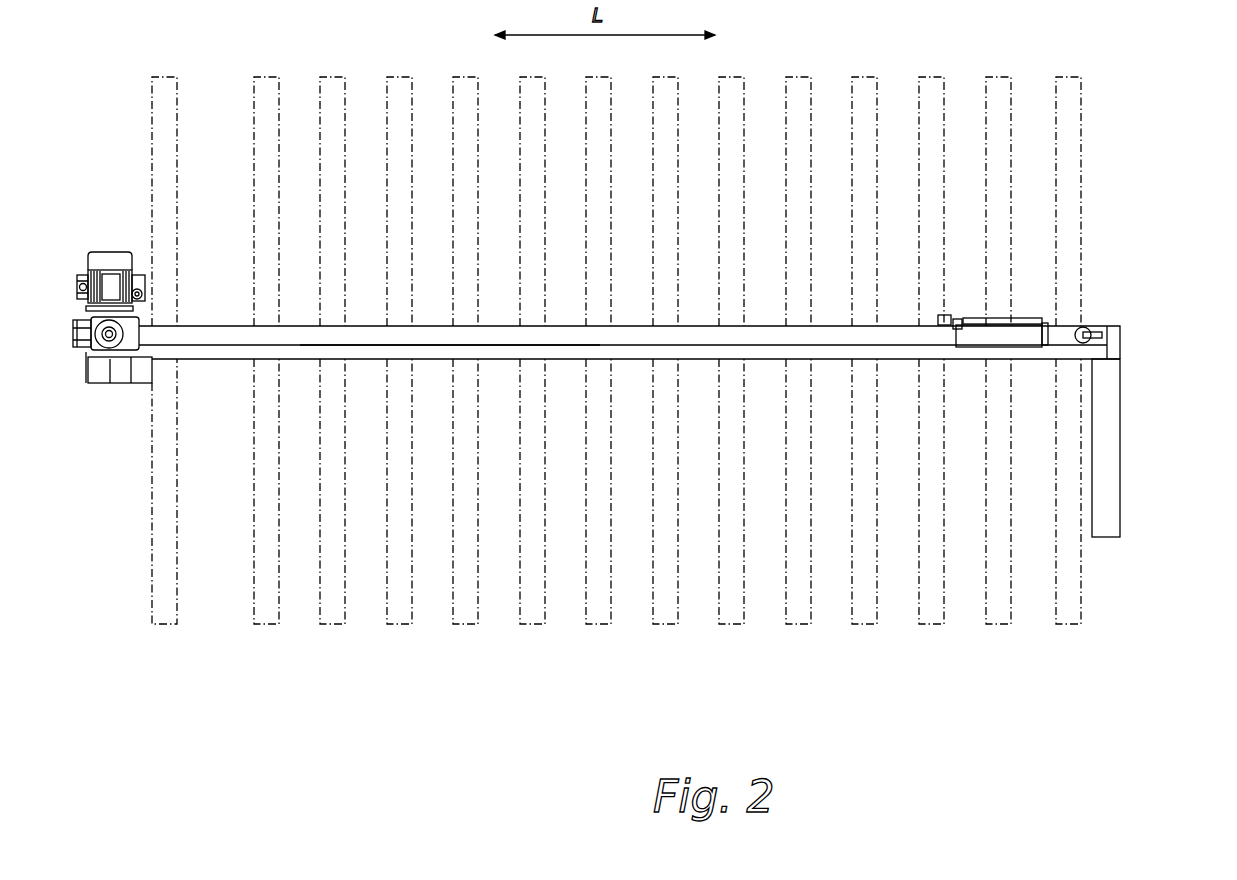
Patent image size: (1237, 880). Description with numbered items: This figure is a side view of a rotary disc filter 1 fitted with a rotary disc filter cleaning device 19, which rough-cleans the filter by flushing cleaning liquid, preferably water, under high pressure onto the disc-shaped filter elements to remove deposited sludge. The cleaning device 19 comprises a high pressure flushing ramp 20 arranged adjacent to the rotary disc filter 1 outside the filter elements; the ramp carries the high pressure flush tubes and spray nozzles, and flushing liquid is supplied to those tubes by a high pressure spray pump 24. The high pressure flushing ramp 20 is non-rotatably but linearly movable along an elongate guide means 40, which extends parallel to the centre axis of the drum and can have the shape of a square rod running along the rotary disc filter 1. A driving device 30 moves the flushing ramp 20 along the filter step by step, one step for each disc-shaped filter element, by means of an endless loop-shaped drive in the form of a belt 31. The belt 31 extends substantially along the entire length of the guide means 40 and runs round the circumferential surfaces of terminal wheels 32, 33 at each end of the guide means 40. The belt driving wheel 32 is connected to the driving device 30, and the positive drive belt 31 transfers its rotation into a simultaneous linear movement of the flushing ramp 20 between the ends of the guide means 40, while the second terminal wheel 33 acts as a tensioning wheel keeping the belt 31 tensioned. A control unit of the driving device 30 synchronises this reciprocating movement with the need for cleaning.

The rotary disc filter 1 is at (639, 392).
The rotary disc filter cleaning device 19 is at (1106, 168).
The high pressure flushing ramp 20 is at (957, 322).
The high pressure spray pump 24 is at (116, 251).
The driving device 30 is at (187, 286).
The belt 31 is at (629, 372).
The belt terminal wheel 32 is at (112, 383).
The belt terminal wheel 33 is at (1083, 326).
The guide means 40 is at (434, 334).